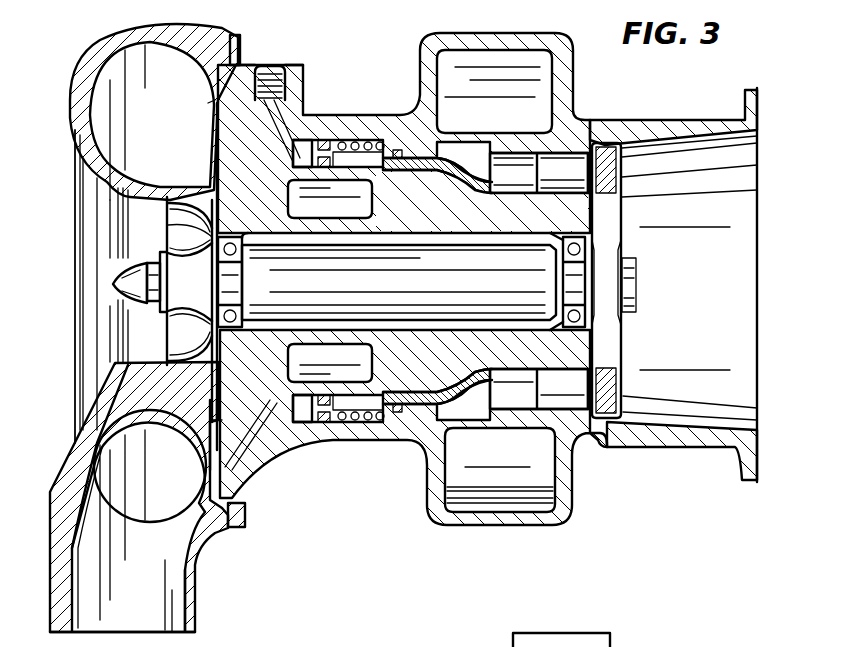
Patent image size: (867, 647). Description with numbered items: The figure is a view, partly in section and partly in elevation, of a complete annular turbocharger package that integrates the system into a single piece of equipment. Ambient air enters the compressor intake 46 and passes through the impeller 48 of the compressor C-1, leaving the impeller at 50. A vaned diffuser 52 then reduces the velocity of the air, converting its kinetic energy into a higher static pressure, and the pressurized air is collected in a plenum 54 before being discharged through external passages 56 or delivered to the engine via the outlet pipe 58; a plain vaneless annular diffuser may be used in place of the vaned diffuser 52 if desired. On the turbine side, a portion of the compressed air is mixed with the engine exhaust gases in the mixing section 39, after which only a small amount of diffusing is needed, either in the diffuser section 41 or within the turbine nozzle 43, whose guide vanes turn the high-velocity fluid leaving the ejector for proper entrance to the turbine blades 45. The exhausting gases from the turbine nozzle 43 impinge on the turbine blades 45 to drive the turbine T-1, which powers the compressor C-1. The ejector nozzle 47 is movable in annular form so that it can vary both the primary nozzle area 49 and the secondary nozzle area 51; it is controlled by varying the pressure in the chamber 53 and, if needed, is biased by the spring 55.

The mixing section 39 is at (470, 165).
The diffuser section 41 is at (565, 163).
The turbine nozzle 43 is at (622, 148).
The turbine blades 45 is at (626, 182).
The compressor intake 46 is at (133, 325).
The ejector nozzle 47 is at (403, 152).
The impeller 48 is at (130, 350).
The primary nozzle area 49 is at (540, 180).
The impeller exit 50 is at (210, 418).
The secondary nozzle area 51 is at (520, 163).
The vaned diffuser 52 is at (220, 453).
The chamber 53 is at (300, 157).
The plenum 54 is at (154, 112).
The spring 55 is at (365, 133).
The external passages 56 is at (250, 133).
The outlet pipe 58 is at (138, 613).
The compressor C-1 is at (178, 244).
The turbine T-1 is at (614, 280).